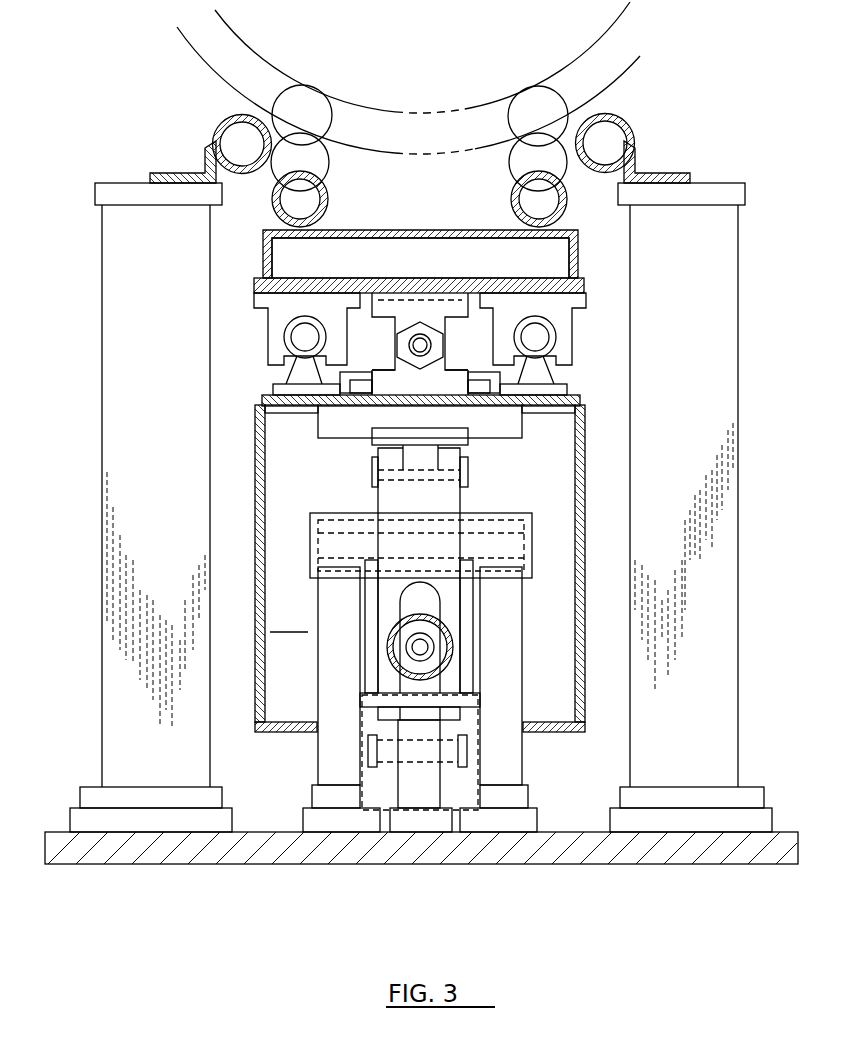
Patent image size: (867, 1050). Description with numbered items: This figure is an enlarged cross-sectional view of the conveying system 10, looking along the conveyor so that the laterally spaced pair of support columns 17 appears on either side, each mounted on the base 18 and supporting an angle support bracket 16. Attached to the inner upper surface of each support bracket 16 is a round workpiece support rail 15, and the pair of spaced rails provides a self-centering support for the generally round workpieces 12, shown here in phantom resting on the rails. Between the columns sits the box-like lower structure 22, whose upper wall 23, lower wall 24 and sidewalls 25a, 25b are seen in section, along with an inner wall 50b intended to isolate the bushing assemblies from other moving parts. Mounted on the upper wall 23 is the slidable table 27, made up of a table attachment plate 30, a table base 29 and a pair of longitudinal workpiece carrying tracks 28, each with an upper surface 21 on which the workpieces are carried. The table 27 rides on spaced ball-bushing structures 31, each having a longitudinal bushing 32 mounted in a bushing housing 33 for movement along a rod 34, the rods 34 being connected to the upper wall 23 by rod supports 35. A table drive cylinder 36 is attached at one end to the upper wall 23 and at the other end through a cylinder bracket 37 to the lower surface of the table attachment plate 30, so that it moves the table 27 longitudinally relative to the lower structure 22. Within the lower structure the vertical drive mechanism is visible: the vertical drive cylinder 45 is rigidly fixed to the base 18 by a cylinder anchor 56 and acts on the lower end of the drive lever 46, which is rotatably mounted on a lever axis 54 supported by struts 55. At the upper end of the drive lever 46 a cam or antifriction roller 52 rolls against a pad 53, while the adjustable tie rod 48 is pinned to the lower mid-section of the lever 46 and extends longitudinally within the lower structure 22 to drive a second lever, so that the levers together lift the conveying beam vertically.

The conveying system 10 is at (84, 166).
The workpiece 12 is at (612, 30).
The workpiece support rail 15 is at (221, 119).
The angle support bracket 16 is at (184, 173).
The support column 17 is at (125, 595).
The base 18 is at (277, 852).
The upper surface 21 is at (296, 188).
The box-like lower structure 22 is at (243, 678).
The upper wall 23 is at (537, 408).
The lower wall 24 is at (550, 742).
The sidewall 25a is at (582, 548).
The sidewall 25b is at (258, 543).
The slidable table 27 is at (602, 273).
The workpiece carrying track 28 is at (290, 100).
The table base 29 is at (263, 244).
The table attachment plate 30 is at (586, 284).
The ball-bushing structure 31 is at (250, 362).
The longitudinal bushing 32 is at (555, 328).
The bushing housing 33 is at (584, 312).
The rod 34 is at (545, 340).
The rod support 35 is at (535, 388).
The table drive cylinder 36 is at (455, 387).
The cylinder bracket 37 is at (417, 312).
The vertical drive cylinder 45 is at (427, 702).
The drive lever 46 is at (450, 615).
The adjustable tie rod 48 is at (447, 667).
The inner wall 50b is at (293, 620).
The cam or antifriction roller 52 is at (420, 453).
The pad 53 is at (347, 422).
The lever axis 54 is at (505, 530).
The strut 55 is at (323, 750).
The cylinder anchor 56 is at (425, 798).